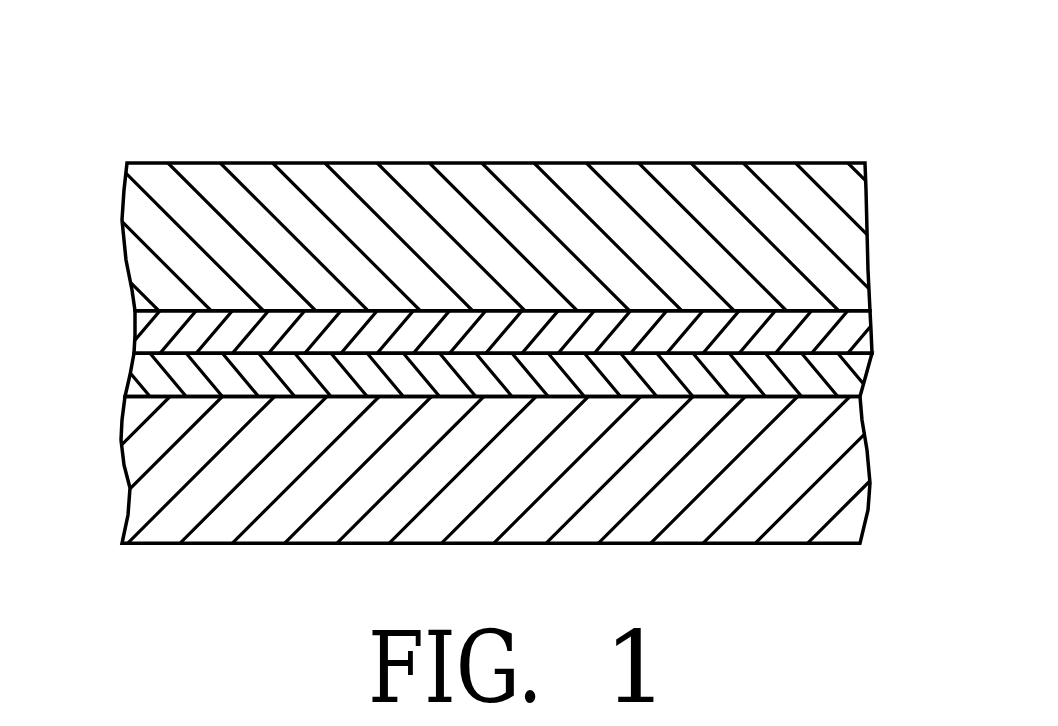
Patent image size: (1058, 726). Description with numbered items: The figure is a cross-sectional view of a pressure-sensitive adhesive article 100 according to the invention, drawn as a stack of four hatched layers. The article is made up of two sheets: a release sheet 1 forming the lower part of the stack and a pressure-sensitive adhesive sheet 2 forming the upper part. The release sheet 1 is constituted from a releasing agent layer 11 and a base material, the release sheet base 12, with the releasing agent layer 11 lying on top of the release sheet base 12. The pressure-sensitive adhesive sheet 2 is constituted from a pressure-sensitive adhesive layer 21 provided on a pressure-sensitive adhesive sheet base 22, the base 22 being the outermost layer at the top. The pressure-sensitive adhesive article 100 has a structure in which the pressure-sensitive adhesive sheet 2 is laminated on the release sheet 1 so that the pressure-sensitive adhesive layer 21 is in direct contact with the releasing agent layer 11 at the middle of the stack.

The pressure-sensitive adhesive article 100 is at (503, 276).
The release sheet 1 is at (489, 444).
The pressure-sensitive adhesive sheet 2 is at (503, 256).
The releasing agent layer 11 is at (133, 373).
The release sheet base 12 is at (140, 470).
The pressure-sensitive adhesive layer 21 is at (134, 327).
The pressure-sensitive adhesive sheet base 22 is at (122, 220).